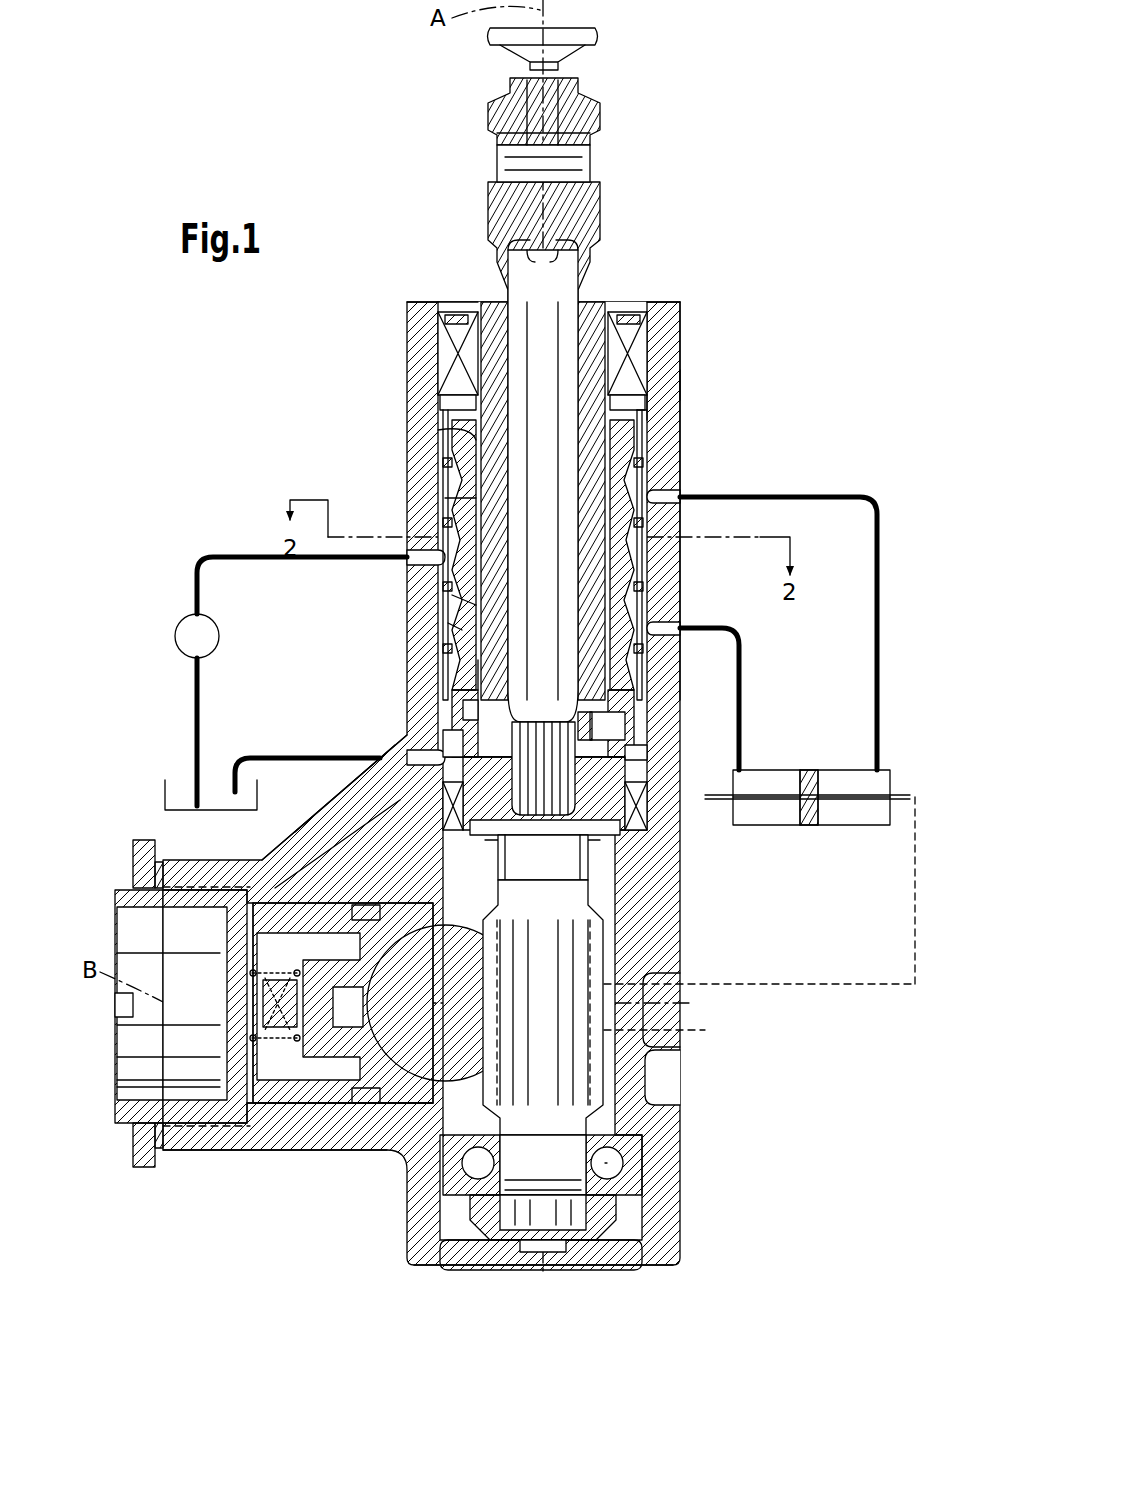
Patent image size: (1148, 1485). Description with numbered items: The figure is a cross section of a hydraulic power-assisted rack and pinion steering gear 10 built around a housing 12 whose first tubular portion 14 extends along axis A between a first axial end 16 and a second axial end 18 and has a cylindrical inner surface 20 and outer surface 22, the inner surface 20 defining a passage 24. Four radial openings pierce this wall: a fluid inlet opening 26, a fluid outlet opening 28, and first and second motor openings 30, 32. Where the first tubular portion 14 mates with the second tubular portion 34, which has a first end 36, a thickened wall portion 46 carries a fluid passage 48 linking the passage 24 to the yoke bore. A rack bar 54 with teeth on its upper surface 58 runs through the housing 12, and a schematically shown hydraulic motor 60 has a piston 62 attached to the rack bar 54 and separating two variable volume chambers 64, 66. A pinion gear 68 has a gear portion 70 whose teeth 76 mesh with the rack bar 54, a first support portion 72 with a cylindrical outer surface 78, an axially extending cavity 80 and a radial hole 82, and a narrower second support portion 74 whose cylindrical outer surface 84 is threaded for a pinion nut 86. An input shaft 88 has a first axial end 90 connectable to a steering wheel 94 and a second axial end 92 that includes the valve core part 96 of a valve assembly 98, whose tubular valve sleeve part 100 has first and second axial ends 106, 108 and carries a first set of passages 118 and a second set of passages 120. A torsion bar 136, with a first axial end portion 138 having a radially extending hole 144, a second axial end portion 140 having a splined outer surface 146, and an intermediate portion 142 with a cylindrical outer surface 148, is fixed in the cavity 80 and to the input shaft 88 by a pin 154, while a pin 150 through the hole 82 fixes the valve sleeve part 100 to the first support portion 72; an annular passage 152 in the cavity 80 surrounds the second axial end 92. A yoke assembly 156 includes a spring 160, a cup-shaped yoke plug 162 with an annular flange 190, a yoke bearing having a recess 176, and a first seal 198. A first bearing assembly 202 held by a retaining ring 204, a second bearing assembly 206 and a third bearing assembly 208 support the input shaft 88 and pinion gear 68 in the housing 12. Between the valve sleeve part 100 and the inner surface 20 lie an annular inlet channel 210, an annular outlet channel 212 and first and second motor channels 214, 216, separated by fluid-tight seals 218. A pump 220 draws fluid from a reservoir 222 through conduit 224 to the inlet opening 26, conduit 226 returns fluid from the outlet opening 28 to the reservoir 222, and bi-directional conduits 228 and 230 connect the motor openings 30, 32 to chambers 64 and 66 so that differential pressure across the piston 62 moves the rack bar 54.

The rack and pinion steering gear 10 is at (365, 130).
The housing 12 is at (400, 1235).
The first tubular portion 14 is at (682, 350).
The first axial end 16 is at (672, 302).
The second axial end 18 is at (690, 1268).
The inner surface 20 is at (660, 405).
The outer surface 22 is at (682, 385).
The passage 24 is at (460, 292).
The fluid inlet opening 26 is at (440, 530).
The fluid outlet opening 28 is at (440, 757).
The first motor opening 30 is at (655, 498).
The second motor opening 32 is at (655, 628).
The second tubular portion 34 is at (260, 1153).
The first end 36 is at (170, 880).
The thickened wall portion 46 is at (335, 778).
The fluid passage 48 is at (330, 865).
The rack bar 54 is at (420, 1075).
The upper surface 58 is at (690, 1021).
The hydraulic motor 60 is at (808, 768).
The piston 62 is at (812, 826).
The chamber 64 is at (848, 826).
The chamber 66 is at (757, 826).
The pinion gear 68 is at (612, 920).
The gear portion 70 is at (625, 1080).
The first support portion 72 is at (630, 790).
The second support portion 74 is at (558, 1160).
The teeth 76 is at (578, 1070).
The cylindrical outer surface 78 is at (625, 765).
The cavity 80 is at (460, 695).
The hole 82 is at (605, 705).
The cylindrical outer surface 84 is at (640, 1110).
The pinion nut 86 is at (497, 1220).
The input shaft 88 is at (487, 218).
The first axial end 90 is at (495, 100).
The second axial end 92 is at (458, 705).
The steering wheel 94 is at (590, 36).
The valve core part 96 is at (476, 665).
The valve assembly 98 is at (600, 575).
The valve sleeve part 100 is at (448, 470).
The first axial end 106 is at (440, 430).
The second axial end 108 is at (465, 740).
The first set of passages 118 is at (650, 420).
The second set of passages 120 is at (450, 600).
The torsion bar 136 is at (556, 330).
The first axial end portion 138 is at (560, 112).
The second axial end portion 140 is at (535, 795).
The intermediate portion 142 is at (600, 320).
The radially extending hole 144 is at (575, 135).
The splined outer surface 146 is at (575, 735).
The cylindrical outer surface 148 is at (500, 272).
The pin 150 is at (610, 725).
The annular passage 152 is at (590, 745).
The pin 154 is at (575, 165).
The yoke assembly 156 is at (280, 1095).
The spring 160 is at (298, 972).
The yoke plug 162 is at (113, 890).
The recess 176 is at (270, 1055).
The annular flange 190 is at (147, 1150).
The first seal 198 is at (340, 1118).
The first bearing assembly 202 is at (455, 345).
The retaining ring 204 is at (455, 310).
The second bearing assembly 206 is at (545, 775).
The third bearing assembly 208 is at (625, 1165).
The annular inlet channel 210 is at (470, 410).
The annular outlet channel 212 is at (560, 782).
The first motor channel 214 is at (448, 498).
The second motor channel 216 is at (465, 623).
The fluid-tight seals 218 is at (652, 462).
The pump 220 is at (175, 628).
The reservoir 222 is at (163, 792).
The conduit 224 is at (258, 557).
The conduit 226 is at (270, 745).
The conduit 228 is at (745, 494).
The conduit 230 is at (742, 645).